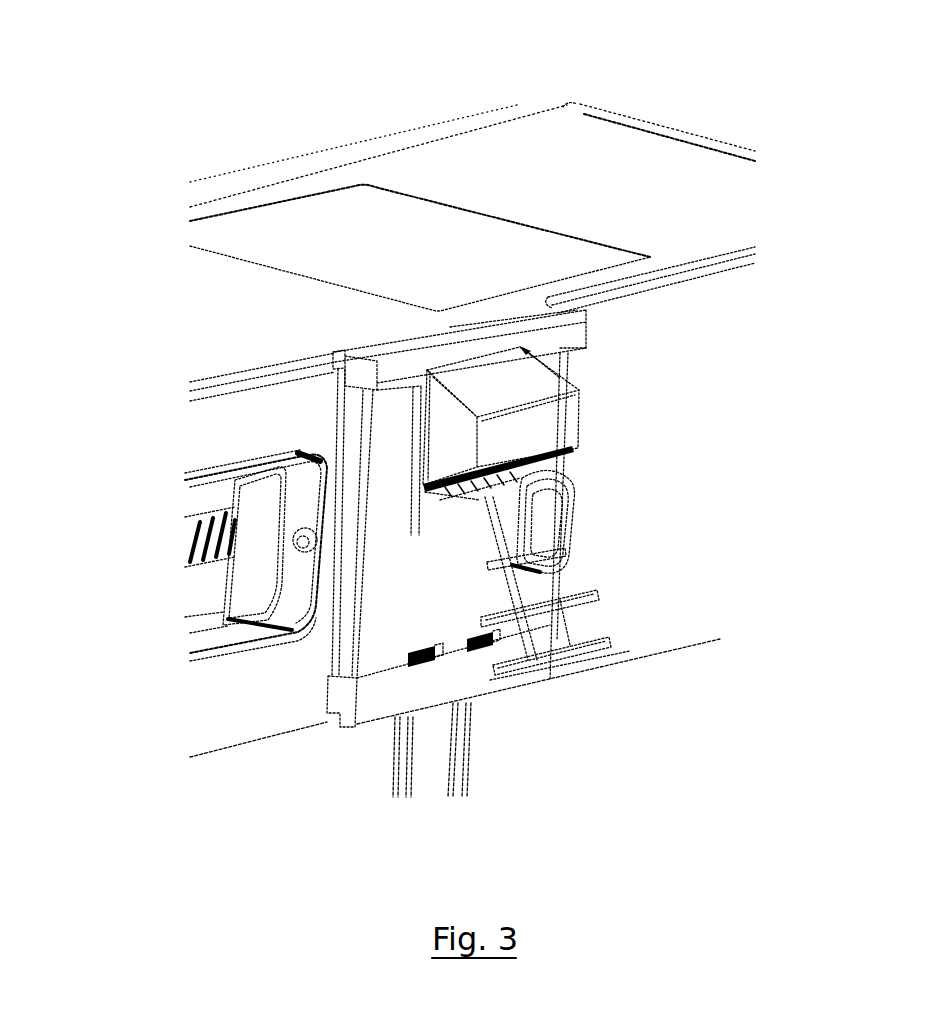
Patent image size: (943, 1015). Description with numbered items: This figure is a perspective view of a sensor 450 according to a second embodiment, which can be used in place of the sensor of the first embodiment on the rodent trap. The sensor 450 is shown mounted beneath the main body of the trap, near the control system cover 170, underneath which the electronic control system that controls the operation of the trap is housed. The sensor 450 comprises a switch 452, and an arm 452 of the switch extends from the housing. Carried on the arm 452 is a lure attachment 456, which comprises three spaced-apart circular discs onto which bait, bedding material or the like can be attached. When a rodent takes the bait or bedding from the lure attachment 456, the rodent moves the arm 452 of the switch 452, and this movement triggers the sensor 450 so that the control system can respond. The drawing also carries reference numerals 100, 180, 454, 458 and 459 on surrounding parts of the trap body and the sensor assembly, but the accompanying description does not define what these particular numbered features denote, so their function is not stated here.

The table 100 is at (432, 163).
The control system cover 170 is at (352, 247).
The bracket 180 is at (407, 377).
The sensor 450 is at (612, 462).
The switch 452 is at (550, 427).
The roller 454 is at (515, 527).
The lure attachment 456 is at (563, 598).
The post 458 is at (571, 352).
The slots 459 is at (480, 650).